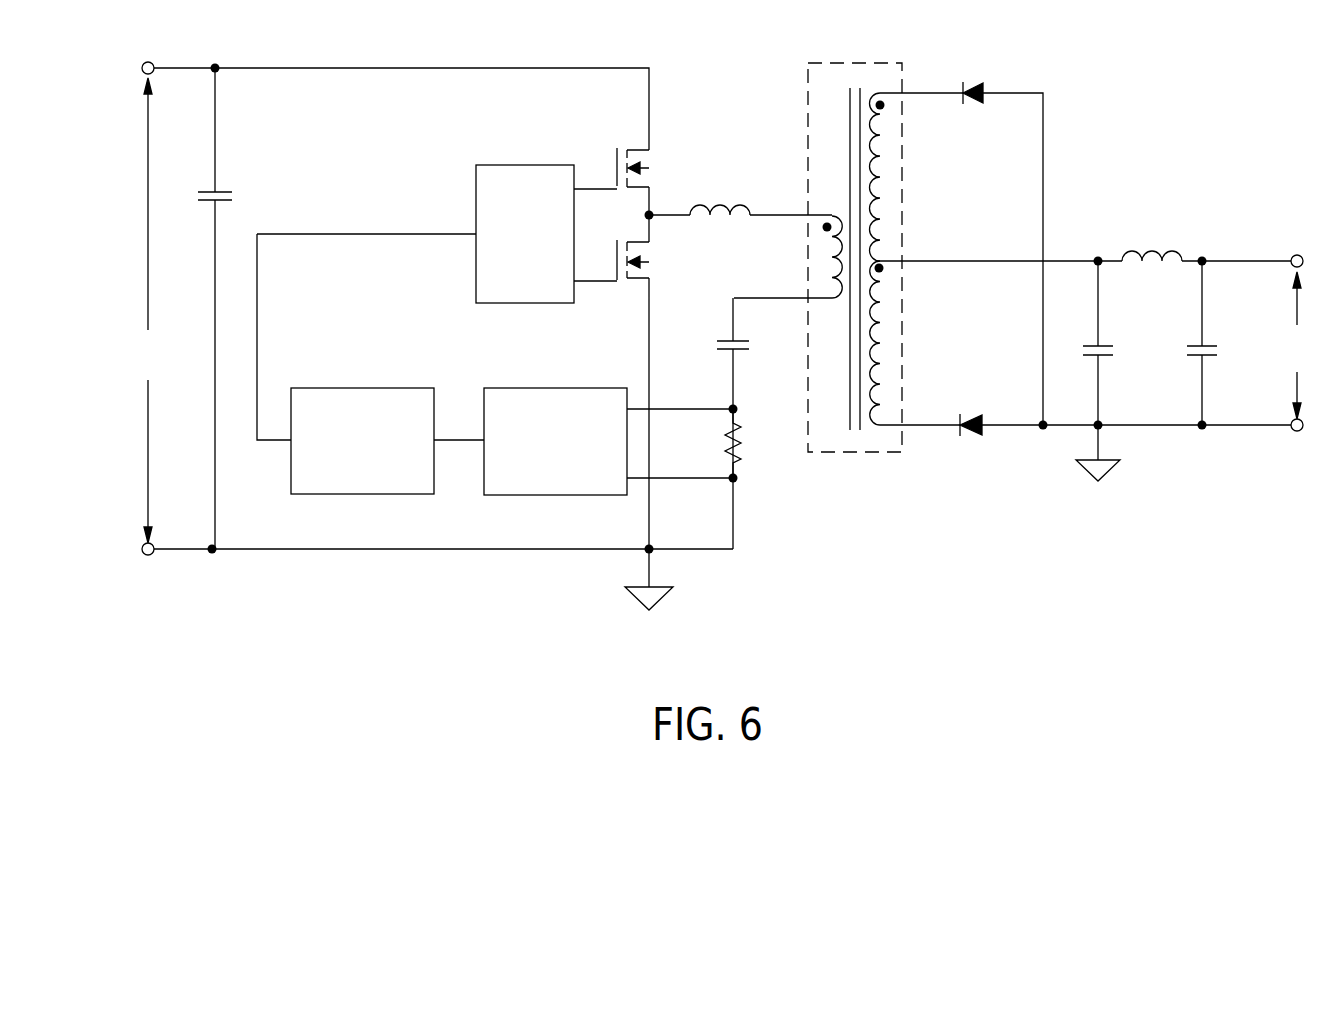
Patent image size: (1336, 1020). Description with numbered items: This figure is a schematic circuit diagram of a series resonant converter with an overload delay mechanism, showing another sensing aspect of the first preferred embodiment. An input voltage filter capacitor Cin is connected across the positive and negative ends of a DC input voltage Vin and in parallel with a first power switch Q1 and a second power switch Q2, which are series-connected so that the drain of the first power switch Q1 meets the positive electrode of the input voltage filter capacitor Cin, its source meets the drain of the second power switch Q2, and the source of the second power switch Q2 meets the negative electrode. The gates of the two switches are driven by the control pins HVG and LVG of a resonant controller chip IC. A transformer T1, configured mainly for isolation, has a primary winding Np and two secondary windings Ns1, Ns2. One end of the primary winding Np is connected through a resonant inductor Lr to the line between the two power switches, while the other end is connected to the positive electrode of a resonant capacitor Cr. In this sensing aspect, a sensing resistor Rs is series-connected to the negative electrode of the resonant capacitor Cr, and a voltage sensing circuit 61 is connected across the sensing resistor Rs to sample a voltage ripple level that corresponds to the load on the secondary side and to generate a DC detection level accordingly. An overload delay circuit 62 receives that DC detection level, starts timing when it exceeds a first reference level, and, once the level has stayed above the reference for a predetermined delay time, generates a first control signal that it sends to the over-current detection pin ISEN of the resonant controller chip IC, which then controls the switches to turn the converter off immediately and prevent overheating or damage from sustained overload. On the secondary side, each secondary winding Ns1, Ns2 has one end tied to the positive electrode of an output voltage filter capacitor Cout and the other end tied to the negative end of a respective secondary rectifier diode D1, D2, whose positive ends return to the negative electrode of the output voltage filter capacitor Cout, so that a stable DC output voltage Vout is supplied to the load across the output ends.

The DC input voltage Vin is at (147, 310).
The input voltage filter capacitor Cin is at (231, 197).
The resonant controller chip IC is at (508, 180).
The control pin HVG is at (550, 190).
The over-current detection pin ISEN is at (504, 236).
The control pin LVG is at (548, 282).
The first power switch Q1 is at (649, 167).
The second power switch Q2 is at (649, 260).
The resonant inductor Lr is at (720, 193).
The transformer T1 is at (855, 242).
The primary winding Np is at (828, 275).
The secondary winding Ns1 is at (904, 177).
The secondary winding Ns2 is at (904, 343).
The secondary rectifier diode D1 is at (976, 76).
The secondary rectifier diode D2 is at (973, 408).
The resonant capacitor Cr is at (745, 346).
The sensing resistor Rs is at (746, 443).
The voltage sensing circuit 61 is at (590, 402).
The overload delay circuit 62 is at (393, 402).
The output voltage filter capacitor Cout is at (1224, 351).
The DC output voltage Vout is at (1297, 345).